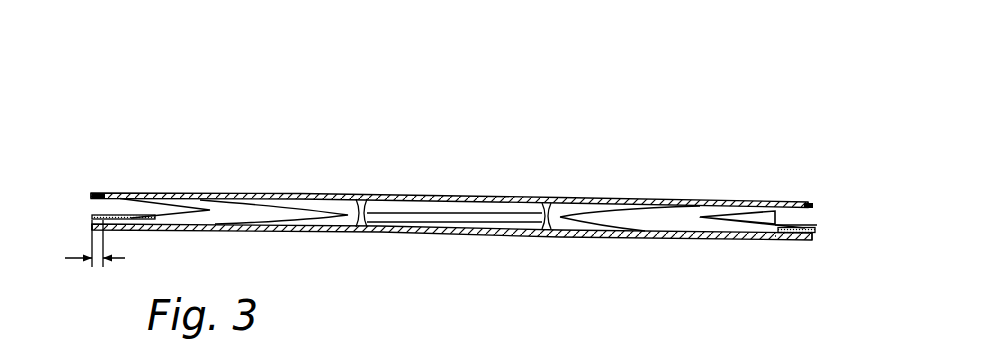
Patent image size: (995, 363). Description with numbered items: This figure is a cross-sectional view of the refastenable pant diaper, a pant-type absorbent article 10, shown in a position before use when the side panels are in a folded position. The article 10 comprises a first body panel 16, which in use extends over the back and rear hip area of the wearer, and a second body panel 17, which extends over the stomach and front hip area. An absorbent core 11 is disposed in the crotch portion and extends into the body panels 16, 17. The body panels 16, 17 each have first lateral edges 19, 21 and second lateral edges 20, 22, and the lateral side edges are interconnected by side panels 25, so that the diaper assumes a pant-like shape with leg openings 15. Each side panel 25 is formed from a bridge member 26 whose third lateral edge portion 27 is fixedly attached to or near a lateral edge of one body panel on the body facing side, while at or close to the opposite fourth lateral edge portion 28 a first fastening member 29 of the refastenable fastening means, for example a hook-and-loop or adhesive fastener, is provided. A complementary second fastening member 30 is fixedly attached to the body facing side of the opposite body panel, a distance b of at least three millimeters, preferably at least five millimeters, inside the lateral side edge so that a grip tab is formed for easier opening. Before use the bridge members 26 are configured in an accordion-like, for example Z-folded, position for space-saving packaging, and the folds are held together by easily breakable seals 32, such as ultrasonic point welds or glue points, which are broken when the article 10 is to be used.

The pant-type absorbent article 10 is at (221, 122).
The absorbent core 11 is at (442, 222).
The leg openings 15 is at (637, 222).
The first body panel 16 is at (557, 192).
The second body panel 17 is at (563, 242).
The first lateral edge 19 is at (90, 193).
The second lateral edge 20 is at (817, 207).
The first lateral edge 21 is at (90, 227).
The second lateral edge 22 is at (814, 240).
The side panel 25 is at (718, 216).
The bridge member 26 is at (157, 203).
The third lateral edge portion 27 is at (818, 207).
The fourth lateral edge portion 28 is at (817, 226).
The first fastening member 29 is at (758, 273).
The second fastening member 30 is at (776, 233).
The seals 32 is at (131, 216).
The distance b is at (100, 257).